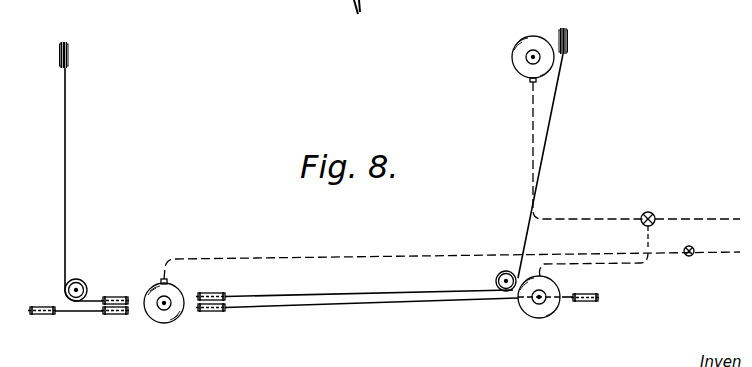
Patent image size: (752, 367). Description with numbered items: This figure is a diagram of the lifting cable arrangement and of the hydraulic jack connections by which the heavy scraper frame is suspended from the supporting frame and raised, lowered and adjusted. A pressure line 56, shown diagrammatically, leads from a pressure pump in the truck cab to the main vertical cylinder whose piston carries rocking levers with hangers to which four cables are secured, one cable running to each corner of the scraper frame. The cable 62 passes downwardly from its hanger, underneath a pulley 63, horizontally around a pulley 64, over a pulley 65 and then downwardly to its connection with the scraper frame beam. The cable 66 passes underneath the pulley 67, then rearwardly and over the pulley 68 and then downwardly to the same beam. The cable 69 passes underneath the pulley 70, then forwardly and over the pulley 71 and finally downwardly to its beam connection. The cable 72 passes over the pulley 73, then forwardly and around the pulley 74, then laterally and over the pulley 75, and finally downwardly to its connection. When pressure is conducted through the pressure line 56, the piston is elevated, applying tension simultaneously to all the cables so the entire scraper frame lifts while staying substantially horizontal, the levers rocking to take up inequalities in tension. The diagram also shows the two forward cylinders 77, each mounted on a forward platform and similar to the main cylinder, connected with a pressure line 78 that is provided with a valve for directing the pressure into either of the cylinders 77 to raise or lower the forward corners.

The pressure line 56 is at (372, 253).
The cable 62 is at (64, 163).
The pulley 63 is at (115, 296).
The pulley 64 is at (78, 280).
The pulley 65 is at (67, 55).
The cable 66 is at (79, 313).
The pulley 67 is at (118, 314).
The pulley 68 is at (38, 315).
The cable 69 is at (393, 302).
The pulley 70 is at (210, 309).
The pulley 71 is at (586, 301).
The cable 72 is at (380, 292).
The pulley 73 is at (215, 296).
The pulley 74 is at (496, 279).
The pulley 75 is at (567, 38).
The cylinder 77 is at (521, 62).
The pressure line 78 is at (702, 219).